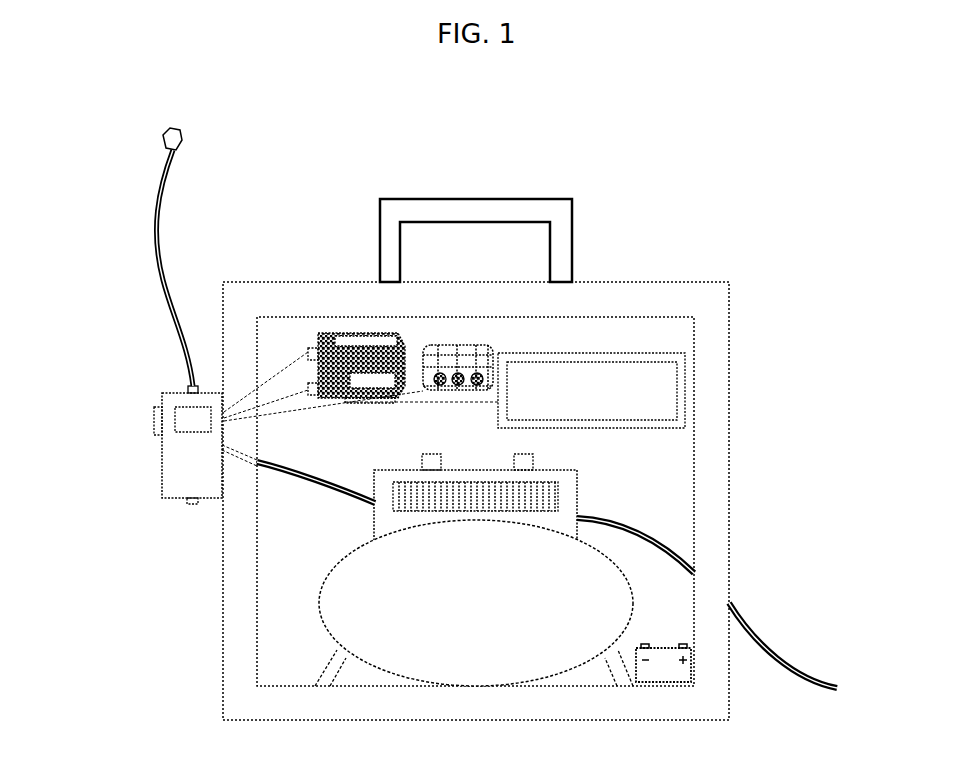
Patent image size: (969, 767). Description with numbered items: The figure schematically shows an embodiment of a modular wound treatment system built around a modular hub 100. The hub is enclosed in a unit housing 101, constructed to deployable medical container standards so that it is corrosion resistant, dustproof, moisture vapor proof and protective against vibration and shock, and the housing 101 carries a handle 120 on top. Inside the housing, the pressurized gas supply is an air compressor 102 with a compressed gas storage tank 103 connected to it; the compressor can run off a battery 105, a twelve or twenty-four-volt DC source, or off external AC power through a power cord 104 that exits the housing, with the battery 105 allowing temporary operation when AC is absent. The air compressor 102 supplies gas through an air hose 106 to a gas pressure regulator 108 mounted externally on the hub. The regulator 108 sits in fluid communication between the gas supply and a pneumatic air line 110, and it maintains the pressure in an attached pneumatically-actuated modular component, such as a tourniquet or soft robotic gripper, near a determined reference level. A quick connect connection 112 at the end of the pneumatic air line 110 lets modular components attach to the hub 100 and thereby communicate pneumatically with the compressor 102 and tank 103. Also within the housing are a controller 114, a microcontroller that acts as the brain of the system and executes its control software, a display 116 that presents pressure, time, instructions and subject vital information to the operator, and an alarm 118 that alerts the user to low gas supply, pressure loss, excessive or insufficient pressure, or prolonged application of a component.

The modular hub 100 is at (311, 162).
The unit housing 101 is at (718, 400).
The air compressor 102 is at (558, 522).
The compressed gas storage tank 103 is at (538, 597).
The power cord 104 is at (737, 610).
The battery 105 is at (675, 672).
The air hose 106 is at (302, 487).
The gas pressure regulator 108 is at (177, 470).
The pneumatic air line 110 is at (157, 225).
The quick connect connection 112 is at (163, 140).
The controller 114 is at (322, 334).
The display 116 is at (618, 390).
The alarm 118 is at (490, 353).
The handle 120 is at (568, 250).